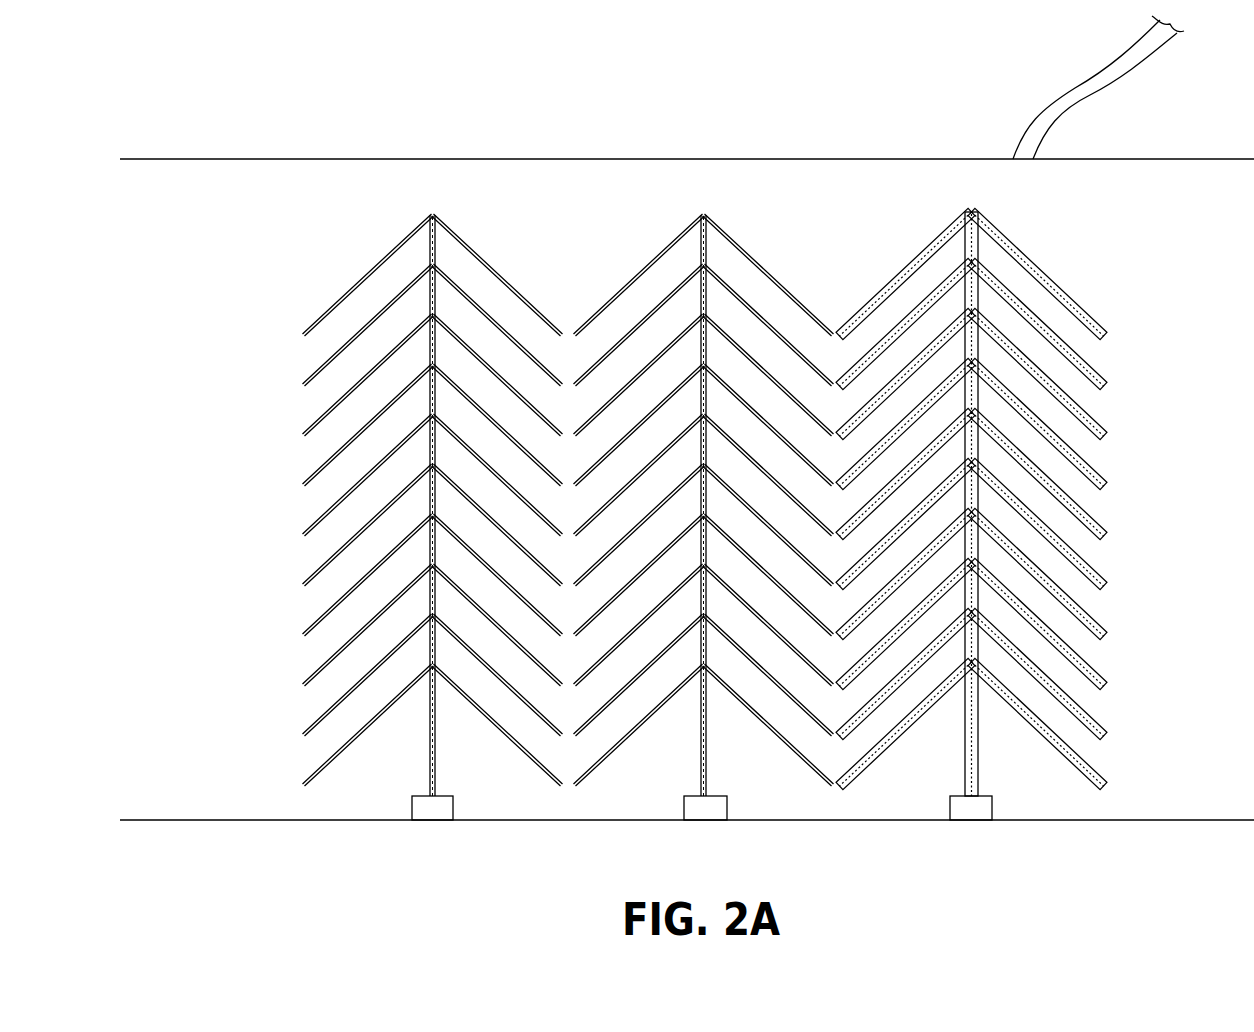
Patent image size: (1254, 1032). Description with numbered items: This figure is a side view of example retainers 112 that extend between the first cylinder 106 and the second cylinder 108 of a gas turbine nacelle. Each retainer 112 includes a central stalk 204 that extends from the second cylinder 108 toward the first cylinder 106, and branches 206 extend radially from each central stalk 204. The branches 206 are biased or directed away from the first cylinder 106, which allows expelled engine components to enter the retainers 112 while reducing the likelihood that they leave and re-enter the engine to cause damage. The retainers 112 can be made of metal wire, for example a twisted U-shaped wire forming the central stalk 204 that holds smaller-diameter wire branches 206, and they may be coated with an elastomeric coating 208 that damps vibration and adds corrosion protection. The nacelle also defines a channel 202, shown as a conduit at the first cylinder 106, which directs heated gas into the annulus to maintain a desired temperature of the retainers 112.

The first cylinder 106 is at (272, 159).
The second cylinder 108 is at (273, 822).
The retainer 112 is at (523, 126).
The channel 202 is at (1095, 88).
The central stalk 204 is at (978, 758).
The branches 206 is at (776, 549).
The elastomeric coating 208 is at (1098, 372).